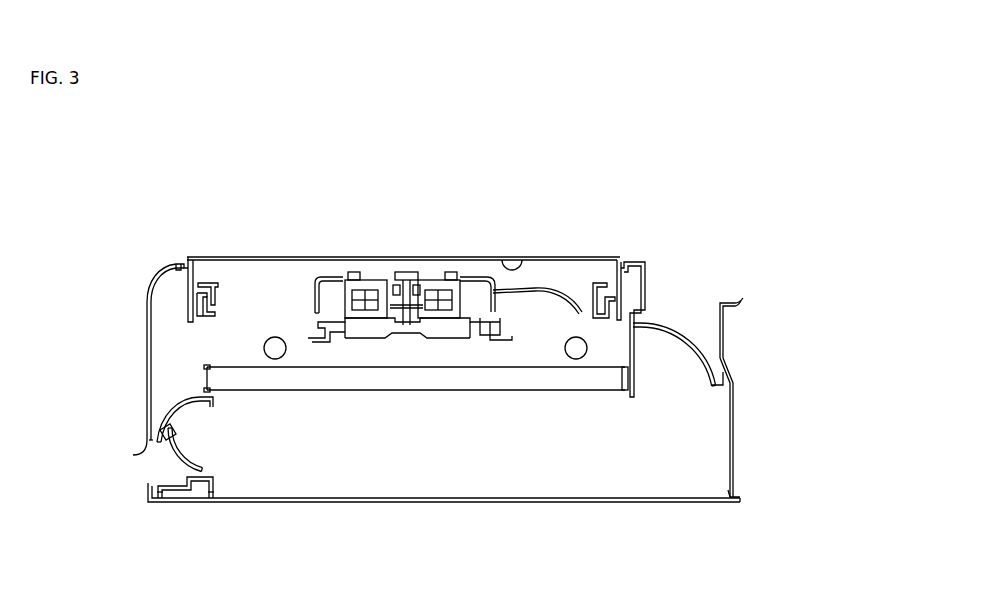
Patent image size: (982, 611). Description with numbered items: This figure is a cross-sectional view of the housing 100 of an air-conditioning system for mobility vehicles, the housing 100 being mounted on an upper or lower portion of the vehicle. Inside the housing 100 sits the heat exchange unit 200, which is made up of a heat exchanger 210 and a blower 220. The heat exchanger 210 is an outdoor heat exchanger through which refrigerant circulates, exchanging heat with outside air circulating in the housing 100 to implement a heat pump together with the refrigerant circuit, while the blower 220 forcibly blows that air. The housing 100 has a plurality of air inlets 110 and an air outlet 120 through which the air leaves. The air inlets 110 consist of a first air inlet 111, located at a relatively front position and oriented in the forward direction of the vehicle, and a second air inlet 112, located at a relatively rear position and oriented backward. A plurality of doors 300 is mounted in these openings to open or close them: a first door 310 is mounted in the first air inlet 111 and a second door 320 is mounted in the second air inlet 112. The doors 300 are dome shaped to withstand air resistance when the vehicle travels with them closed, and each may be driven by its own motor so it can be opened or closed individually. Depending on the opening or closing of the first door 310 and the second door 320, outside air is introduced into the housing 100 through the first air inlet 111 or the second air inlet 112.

The housing 100 is at (583, 246).
The air inlets 110 is at (457, 380).
The first air inlet 111 is at (133, 455).
The second air inlet 112 is at (712, 366).
The air outlet 120 is at (522, 268).
The heat exchange unit 200 is at (422, 192).
The heat exchanger 210 is at (276, 337).
The blower 220 is at (403, 287).
The doors 300 is at (440, 404).
The first door 310 is at (172, 462).
The second door 320 is at (668, 322).